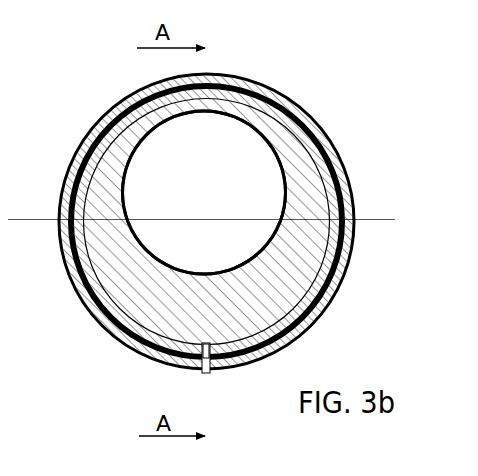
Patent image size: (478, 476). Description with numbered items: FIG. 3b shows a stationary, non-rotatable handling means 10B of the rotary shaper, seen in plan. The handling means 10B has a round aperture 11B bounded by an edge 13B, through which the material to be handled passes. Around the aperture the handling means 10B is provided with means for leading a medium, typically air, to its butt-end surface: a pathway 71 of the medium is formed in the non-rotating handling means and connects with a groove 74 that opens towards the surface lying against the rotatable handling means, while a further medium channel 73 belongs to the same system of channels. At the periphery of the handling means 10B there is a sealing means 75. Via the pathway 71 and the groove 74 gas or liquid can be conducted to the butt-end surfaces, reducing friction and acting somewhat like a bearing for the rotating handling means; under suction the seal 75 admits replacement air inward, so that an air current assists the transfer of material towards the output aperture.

The first stationary, non-rotatable handling means 10B is at (138, 287).
The round aperture 11B is at (204, 192).
The edge 13B is at (287, 166).
The pathway of the medium 71 is at (203, 373).
The medium channel 73 is at (197, 364).
The groove 74 is at (303, 295).
The sealing means 75 is at (112, 101).